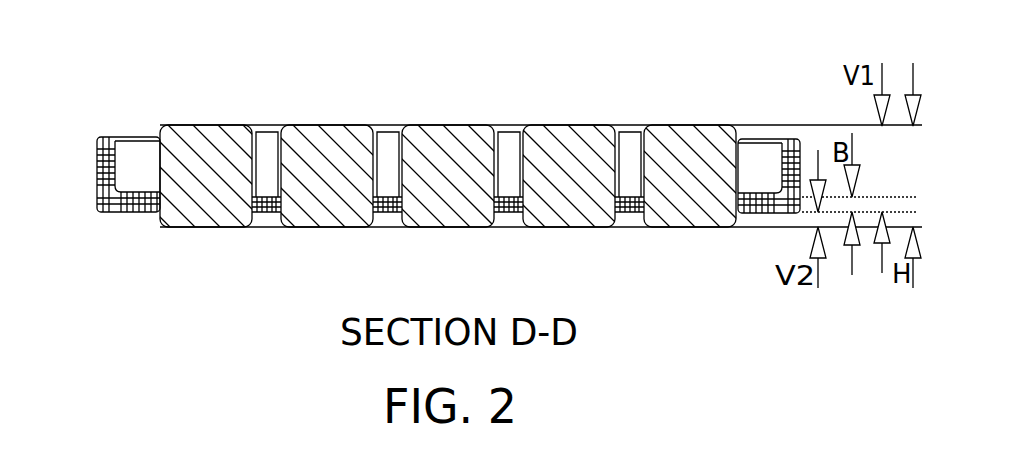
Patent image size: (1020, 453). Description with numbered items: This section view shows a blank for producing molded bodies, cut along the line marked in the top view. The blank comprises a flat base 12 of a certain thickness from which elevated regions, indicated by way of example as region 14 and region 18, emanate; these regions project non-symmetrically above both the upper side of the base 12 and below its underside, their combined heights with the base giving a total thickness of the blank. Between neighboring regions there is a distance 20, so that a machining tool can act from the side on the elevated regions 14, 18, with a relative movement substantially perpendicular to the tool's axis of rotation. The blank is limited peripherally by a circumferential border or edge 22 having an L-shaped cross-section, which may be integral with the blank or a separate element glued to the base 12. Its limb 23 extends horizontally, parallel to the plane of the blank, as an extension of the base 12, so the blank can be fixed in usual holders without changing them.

The base 12 is at (632, 207).
The region 14 is at (690, 148).
The region 18 is at (202, 145).
The distance 20 is at (627, 162).
The circumferential border 22 is at (95, 162).
The limb 23 is at (128, 207).